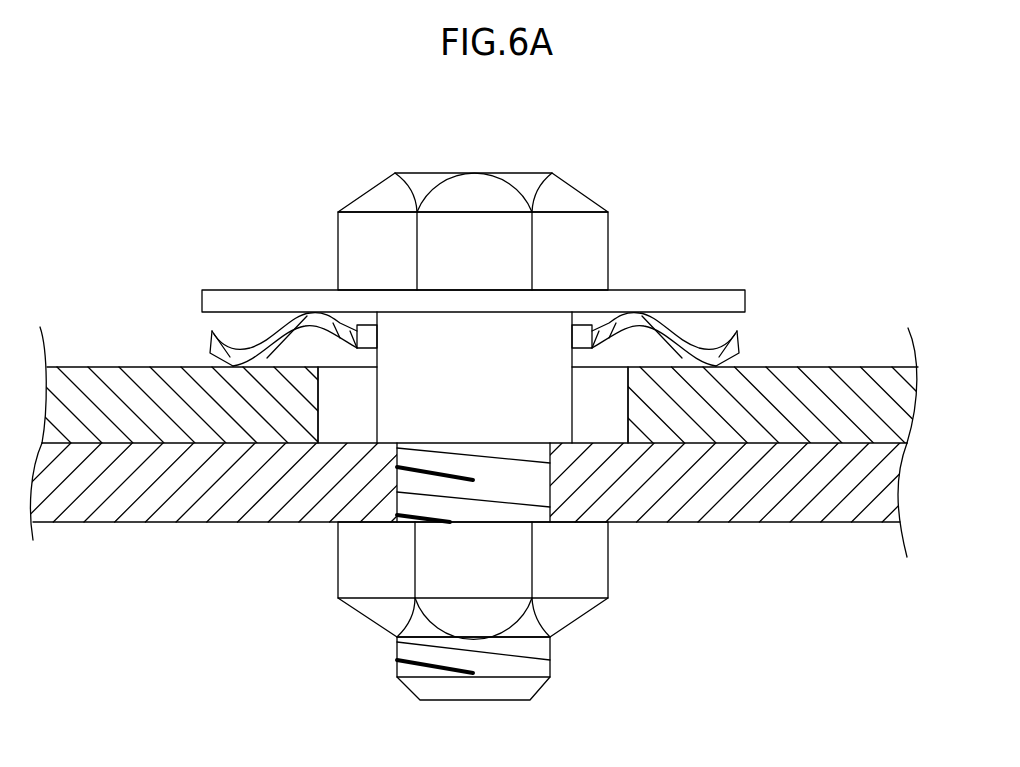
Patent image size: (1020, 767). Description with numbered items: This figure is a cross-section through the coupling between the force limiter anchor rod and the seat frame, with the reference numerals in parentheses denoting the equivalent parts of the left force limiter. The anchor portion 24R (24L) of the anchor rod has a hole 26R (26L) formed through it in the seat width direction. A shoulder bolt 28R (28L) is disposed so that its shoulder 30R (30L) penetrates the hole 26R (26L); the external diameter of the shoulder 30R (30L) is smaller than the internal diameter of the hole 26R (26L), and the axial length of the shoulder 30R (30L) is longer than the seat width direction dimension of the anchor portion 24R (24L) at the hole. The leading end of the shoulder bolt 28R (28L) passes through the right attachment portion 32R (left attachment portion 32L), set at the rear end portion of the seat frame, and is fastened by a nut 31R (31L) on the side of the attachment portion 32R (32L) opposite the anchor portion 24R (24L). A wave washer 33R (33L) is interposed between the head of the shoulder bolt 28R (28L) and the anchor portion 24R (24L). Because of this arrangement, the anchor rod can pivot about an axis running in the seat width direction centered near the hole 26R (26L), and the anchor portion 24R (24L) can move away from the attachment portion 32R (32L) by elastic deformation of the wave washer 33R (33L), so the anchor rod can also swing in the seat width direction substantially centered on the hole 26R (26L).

The anchor portion 24R is at (500, 338).
The anchor portion 24L is at (70, 366).
The hole 26R is at (412, 511).
The hole 26L is at (320, 400).
The shoulder bolt 28R is at (473, 200).
The shoulder bolt 28L is at (425, 172).
The shoulder 30R is at (473, 285).
The shoulder 30L is at (400, 335).
The nut 31R is at (550, 574).
The nut 31L is at (587, 605).
The right attachment portion 32R is at (510, 521).
The left attachment portion 32L is at (768, 523).
The wave washer 33R is at (519, 293).
The wave washer 33L is at (685, 345).